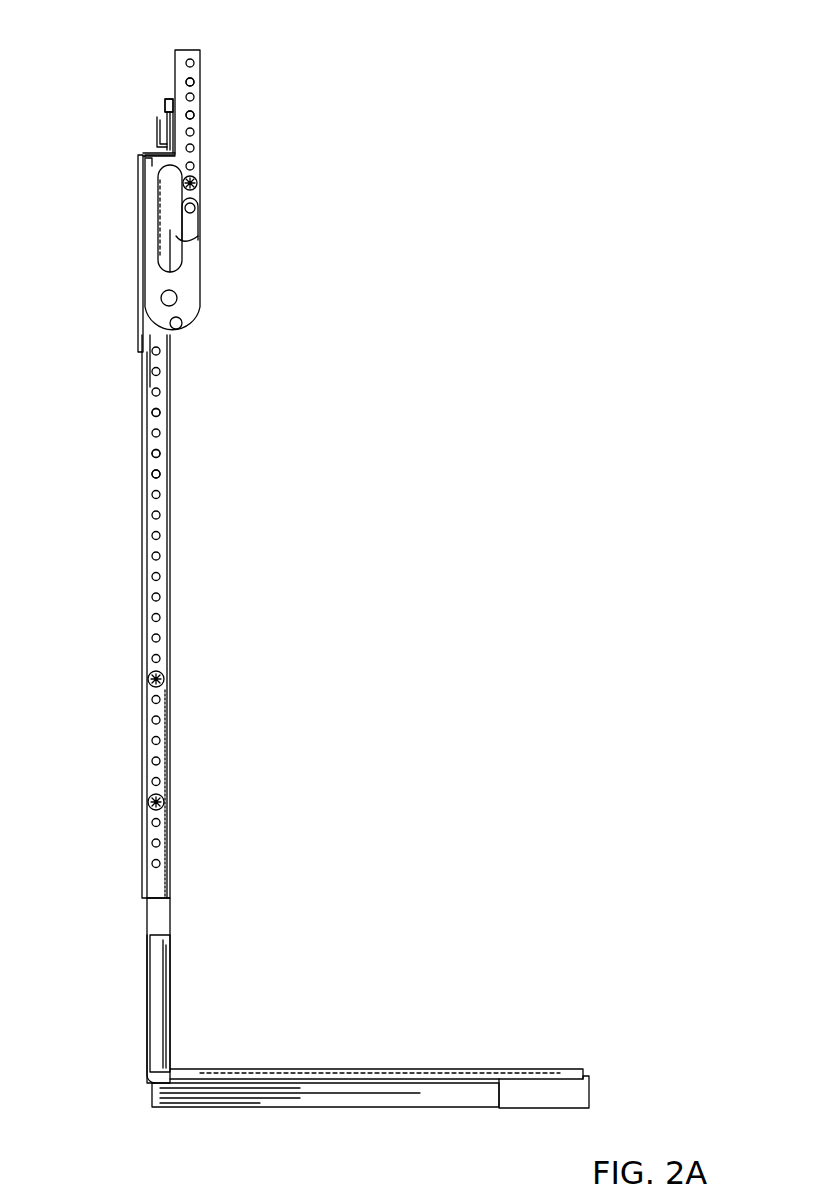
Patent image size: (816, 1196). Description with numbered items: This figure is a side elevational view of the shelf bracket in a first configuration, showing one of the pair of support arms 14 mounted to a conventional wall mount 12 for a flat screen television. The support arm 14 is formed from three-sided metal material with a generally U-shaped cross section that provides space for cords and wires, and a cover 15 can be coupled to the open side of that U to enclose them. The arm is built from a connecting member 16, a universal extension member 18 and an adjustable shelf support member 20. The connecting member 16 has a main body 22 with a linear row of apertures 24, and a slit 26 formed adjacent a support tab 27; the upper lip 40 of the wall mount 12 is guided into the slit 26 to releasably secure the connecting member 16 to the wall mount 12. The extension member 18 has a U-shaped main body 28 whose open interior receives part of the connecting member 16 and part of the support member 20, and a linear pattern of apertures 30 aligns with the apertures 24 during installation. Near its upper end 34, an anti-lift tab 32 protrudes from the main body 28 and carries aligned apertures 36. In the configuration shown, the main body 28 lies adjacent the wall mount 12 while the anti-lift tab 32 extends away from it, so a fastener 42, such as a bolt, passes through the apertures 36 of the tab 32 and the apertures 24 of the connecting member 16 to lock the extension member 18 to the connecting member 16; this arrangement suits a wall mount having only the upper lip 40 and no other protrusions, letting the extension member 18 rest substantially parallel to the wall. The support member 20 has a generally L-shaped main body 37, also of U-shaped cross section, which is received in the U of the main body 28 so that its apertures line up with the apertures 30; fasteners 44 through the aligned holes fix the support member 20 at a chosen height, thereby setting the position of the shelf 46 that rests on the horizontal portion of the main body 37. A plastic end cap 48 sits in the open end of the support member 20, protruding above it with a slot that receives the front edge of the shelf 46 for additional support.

The wall mount 12 is at (140, 164).
The support arm 14 is at (96, 76).
The cover 15 is at (170, 996).
The connecting member 16 is at (198, 62).
The universal extension member 18 is at (172, 606).
The adjustable shelf support member 20 is at (149, 999).
The main body 22 is at (165, 100).
The apertures 24 is at (194, 82).
The slit 26 is at (168, 98).
The support tab 27 is at (156, 136).
The main body 28 is at (167, 700).
The apertures 30 is at (152, 413).
The anti-lift tab 32 is at (180, 238).
The upper end 34 is at (145, 153).
The apertures 36 is at (195, 165).
The main body 37 is at (172, 910).
The upper lip 40 is at (164, 106).
The fastener 42 is at (198, 182).
The fasteners 44 is at (150, 676).
The shelf 46 is at (392, 1068).
The end cap 48 is at (512, 1110).